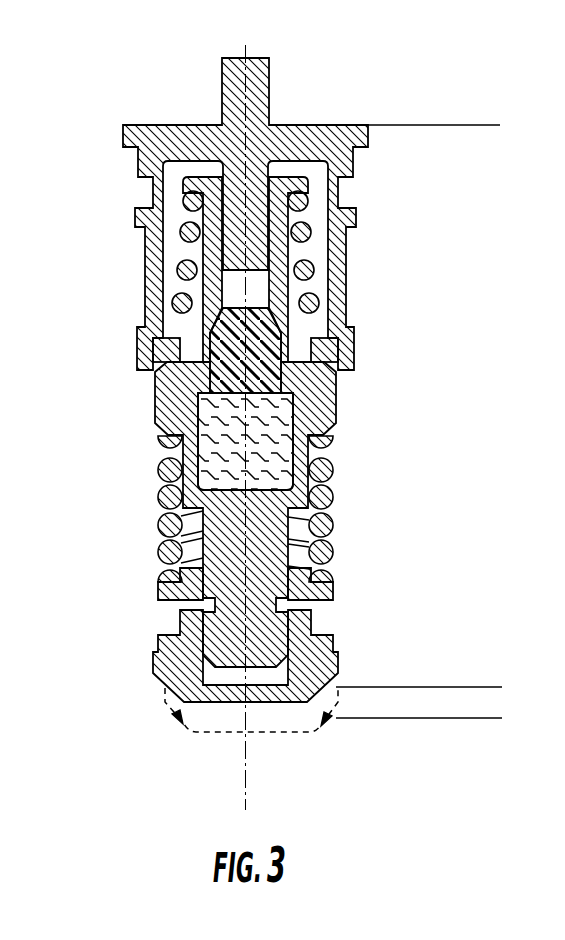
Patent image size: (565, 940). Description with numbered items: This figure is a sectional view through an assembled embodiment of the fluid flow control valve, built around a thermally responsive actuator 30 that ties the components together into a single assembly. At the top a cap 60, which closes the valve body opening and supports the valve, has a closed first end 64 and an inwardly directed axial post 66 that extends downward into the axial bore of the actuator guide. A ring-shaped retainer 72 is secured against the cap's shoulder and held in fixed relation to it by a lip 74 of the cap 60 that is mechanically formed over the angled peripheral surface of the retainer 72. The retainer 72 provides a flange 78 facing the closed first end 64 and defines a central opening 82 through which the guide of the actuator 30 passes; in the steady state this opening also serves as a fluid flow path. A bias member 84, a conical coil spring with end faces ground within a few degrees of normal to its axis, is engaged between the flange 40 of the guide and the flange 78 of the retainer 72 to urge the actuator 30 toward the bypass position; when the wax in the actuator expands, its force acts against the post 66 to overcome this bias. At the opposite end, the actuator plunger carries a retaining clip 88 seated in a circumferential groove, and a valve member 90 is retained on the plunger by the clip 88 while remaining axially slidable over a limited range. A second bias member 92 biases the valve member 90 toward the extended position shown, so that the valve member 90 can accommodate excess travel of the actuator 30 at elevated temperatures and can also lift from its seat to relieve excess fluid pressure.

The actuator 30 is at (337, 407).
The flange 40 is at (183, 183).
The cap 60 is at (163, 125).
The closed first end 64 is at (293, 125).
The axial post 66 is at (275, 176).
The ring-shaped retainer 72 is at (153, 353).
The lip 74 is at (138, 363).
The flange 78 is at (190, 338).
The central opening 82 is at (293, 350).
The bias member 84 is at (313, 268).
The retaining clip 88 is at (158, 605).
The valve member 90 is at (155, 665).
The bias member 92 is at (158, 525).